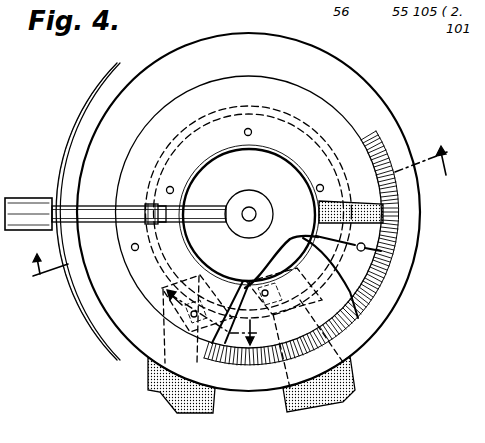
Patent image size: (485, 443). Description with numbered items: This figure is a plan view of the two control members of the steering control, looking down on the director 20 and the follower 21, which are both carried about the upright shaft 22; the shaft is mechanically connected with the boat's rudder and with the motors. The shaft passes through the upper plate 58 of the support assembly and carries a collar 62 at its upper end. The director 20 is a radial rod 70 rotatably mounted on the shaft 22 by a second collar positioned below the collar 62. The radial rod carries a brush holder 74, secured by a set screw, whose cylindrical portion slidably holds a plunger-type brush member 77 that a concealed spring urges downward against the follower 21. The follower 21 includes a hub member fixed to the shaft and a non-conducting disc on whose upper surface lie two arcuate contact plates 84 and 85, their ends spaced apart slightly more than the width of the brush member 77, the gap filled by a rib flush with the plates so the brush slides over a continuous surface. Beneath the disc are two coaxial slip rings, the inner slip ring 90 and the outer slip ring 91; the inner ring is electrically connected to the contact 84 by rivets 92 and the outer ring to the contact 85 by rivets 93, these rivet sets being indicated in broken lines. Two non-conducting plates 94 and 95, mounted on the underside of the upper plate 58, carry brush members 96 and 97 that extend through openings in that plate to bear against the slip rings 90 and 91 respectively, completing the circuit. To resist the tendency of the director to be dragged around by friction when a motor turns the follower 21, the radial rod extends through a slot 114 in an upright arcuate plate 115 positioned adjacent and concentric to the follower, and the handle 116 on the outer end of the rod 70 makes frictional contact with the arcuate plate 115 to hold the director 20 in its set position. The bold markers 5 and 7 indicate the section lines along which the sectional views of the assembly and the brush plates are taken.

The director 20 is at (108, 225).
The follower 21 is at (335, 109).
The upright shaft 22 is at (253, 209).
The upper plate 58 is at (421, 239).
The collar 62 is at (239, 192).
The radial rod 70 is at (217, 224).
The brush holder 74 is at (147, 204).
The brush member 77 is at (166, 224).
The contact 84 is at (257, 88).
The contact 85 is at (398, 226).
The inner slip ring 90 is at (309, 265).
The outer slip ring 91 is at (361, 280).
The rivets 92 is at (170, 186).
The rivets 93 is at (136, 251).
The non-conducting plate 94 is at (345, 390).
The non-conducting plate 95 is at (155, 396).
The brush member 96 is at (296, 328).
The brush member 97 is at (212, 310).
The slot 114 is at (70, 141).
The arcuate plate 115 is at (104, 334).
The handle 116 is at (25, 203).
The section line 5- 5 is at (242, 225).
The section line 7- 7 is at (213, 315).